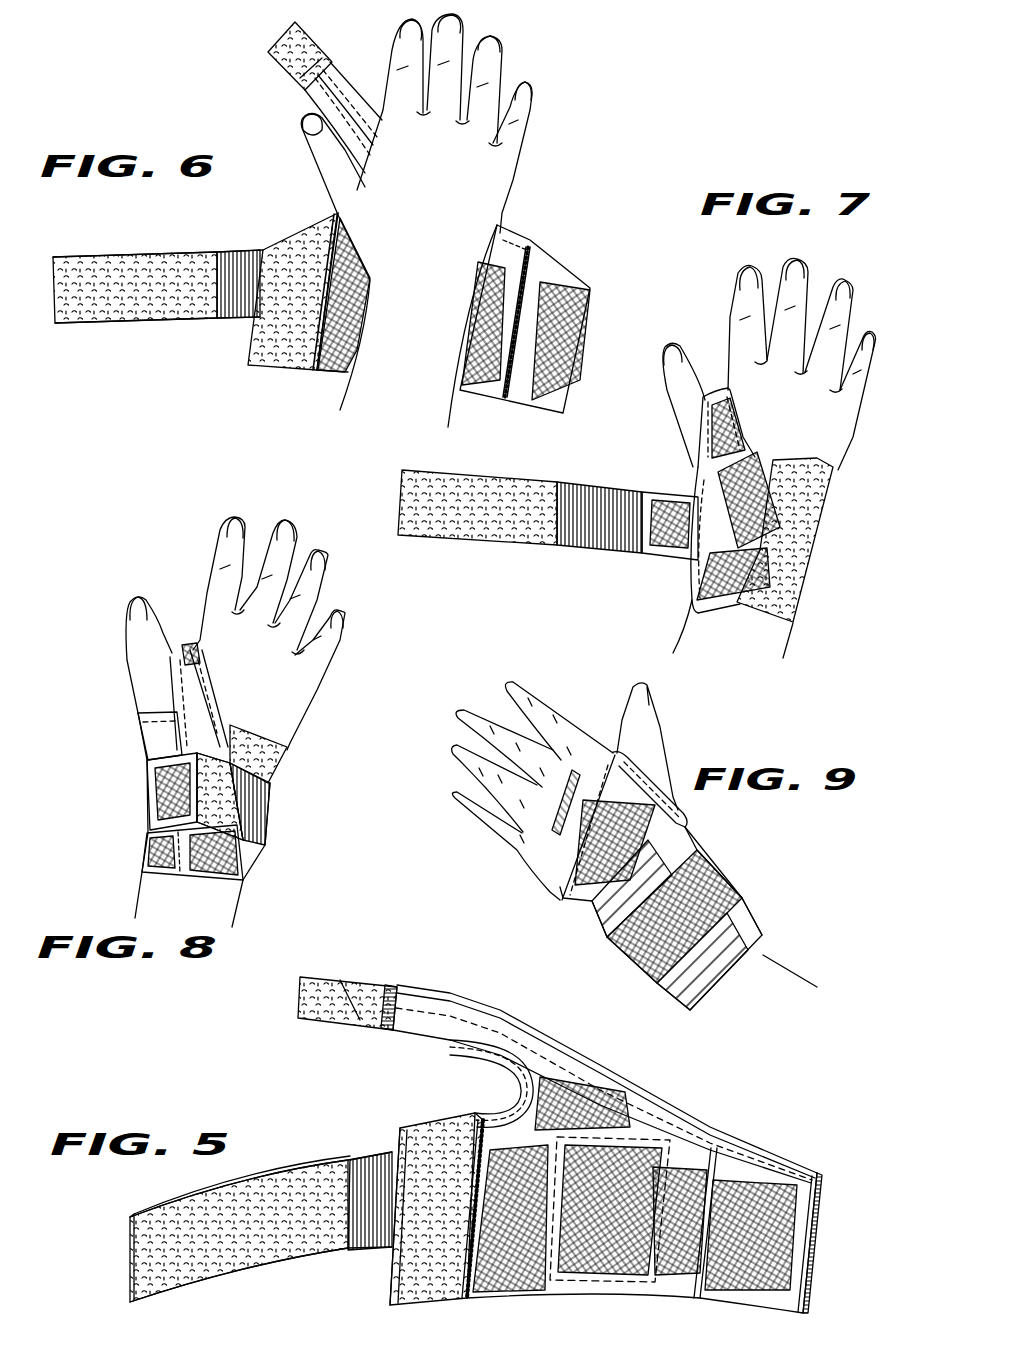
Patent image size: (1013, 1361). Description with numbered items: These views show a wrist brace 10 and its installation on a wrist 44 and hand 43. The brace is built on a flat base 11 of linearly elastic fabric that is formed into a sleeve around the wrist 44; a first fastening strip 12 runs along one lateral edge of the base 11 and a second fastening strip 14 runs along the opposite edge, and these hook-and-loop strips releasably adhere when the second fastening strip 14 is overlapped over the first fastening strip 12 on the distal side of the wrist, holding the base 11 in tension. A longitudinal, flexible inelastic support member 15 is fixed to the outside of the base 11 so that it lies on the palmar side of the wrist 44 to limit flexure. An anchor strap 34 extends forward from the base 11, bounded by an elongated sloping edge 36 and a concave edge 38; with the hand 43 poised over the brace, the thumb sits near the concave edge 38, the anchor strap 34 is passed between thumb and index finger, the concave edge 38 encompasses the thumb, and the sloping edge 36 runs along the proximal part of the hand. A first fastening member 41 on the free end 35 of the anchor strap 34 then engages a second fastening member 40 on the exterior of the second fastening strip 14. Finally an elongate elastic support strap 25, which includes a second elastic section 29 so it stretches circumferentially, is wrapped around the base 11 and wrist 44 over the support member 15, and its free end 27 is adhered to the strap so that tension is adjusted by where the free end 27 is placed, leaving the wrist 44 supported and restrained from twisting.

In FIG. 6, the wrist brace 10 is at (532, 238).
In FIG. 6, the base 11 is at (487, 400).
In FIG. 8, the base 11 is at (150, 857).
In FIG. 9, the base 11 is at (745, 910).
In FIG. 5, the base 11 is at (483, 1275).
In FIG. 6, the first fastening strip 12 is at (562, 289).
In FIG. 5, the first fastening strip 12 is at (787, 1247).
In FIG. 6, the second fastening strip 14 is at (283, 360).
In FIG. 8, the second fastening strip 14 is at (237, 857).
In FIG. 5, the second fastening strip 14 is at (430, 1140).
In FIG. 9, the longitudinal support member 15 is at (732, 937).
In FIG. 5, the longitudinal support member 15 is at (663, 1270).
In FIG. 6, the support strap 25 is at (207, 320).
In FIG. 7, the support strap 25 is at (527, 553).
In FIG. 8, the support strap 25 is at (153, 785).
In FIG. 9, the support strap 25 is at (707, 860).
In FIG. 5, the support strap 25 is at (300, 1162).
In FIG. 6, the free end 27 is at (105, 312).
In FIG. 7, the free end 27 is at (422, 482).
In FIG. 5, the free end 27 is at (130, 1257).
In FIG. 7, the second elastic section 29 is at (602, 482).
In FIG. 5, the second elastic section 29 is at (373, 1157).
In FIG. 6, the anchor strap 34 is at (340, 70).
In FIG. 7, the anchor strap 34 is at (726, 427).
In FIG. 8, the anchor strap 34 is at (183, 658).
In FIG. 5, the anchor strap 34 is at (497, 1028).
In FIG. 6, the free end 35 is at (272, 42).
In FIG. 7, the free end 35 is at (763, 463).
In FIG. 5, the free end 35 is at (298, 1008).
In FIG. 5, the elongated sloping edge 36 is at (560, 1045).
In FIG. 6, the concave edge 38 is at (305, 95).
In FIG. 9, the concave edge 38 is at (680, 812).
In FIG. 5, the concave edge 38 is at (517, 1087).
In FIG. 7, the second fastening member 40 is at (720, 543).
In FIG. 6, the first fastening member 41 is at (268, 58).
In FIG. 7, the first fastening member 41 is at (710, 577).
In FIG. 5, the first fastening member 41 is at (350, 993).
In FIG. 6, the hand 43 is at (495, 193).
In FIG. 7, the hand 43 is at (847, 454).
In FIG. 8, the hand 43 is at (283, 695).
In FIG. 9, the hand 43 is at (607, 846).
In FIG. 6, the wrist 44 is at (372, 375).
In FIG. 7, the wrist 44 is at (770, 655).
In FIG. 8, the wrist 44 is at (213, 895).
In FIG. 9, the wrist 44 is at (760, 957).